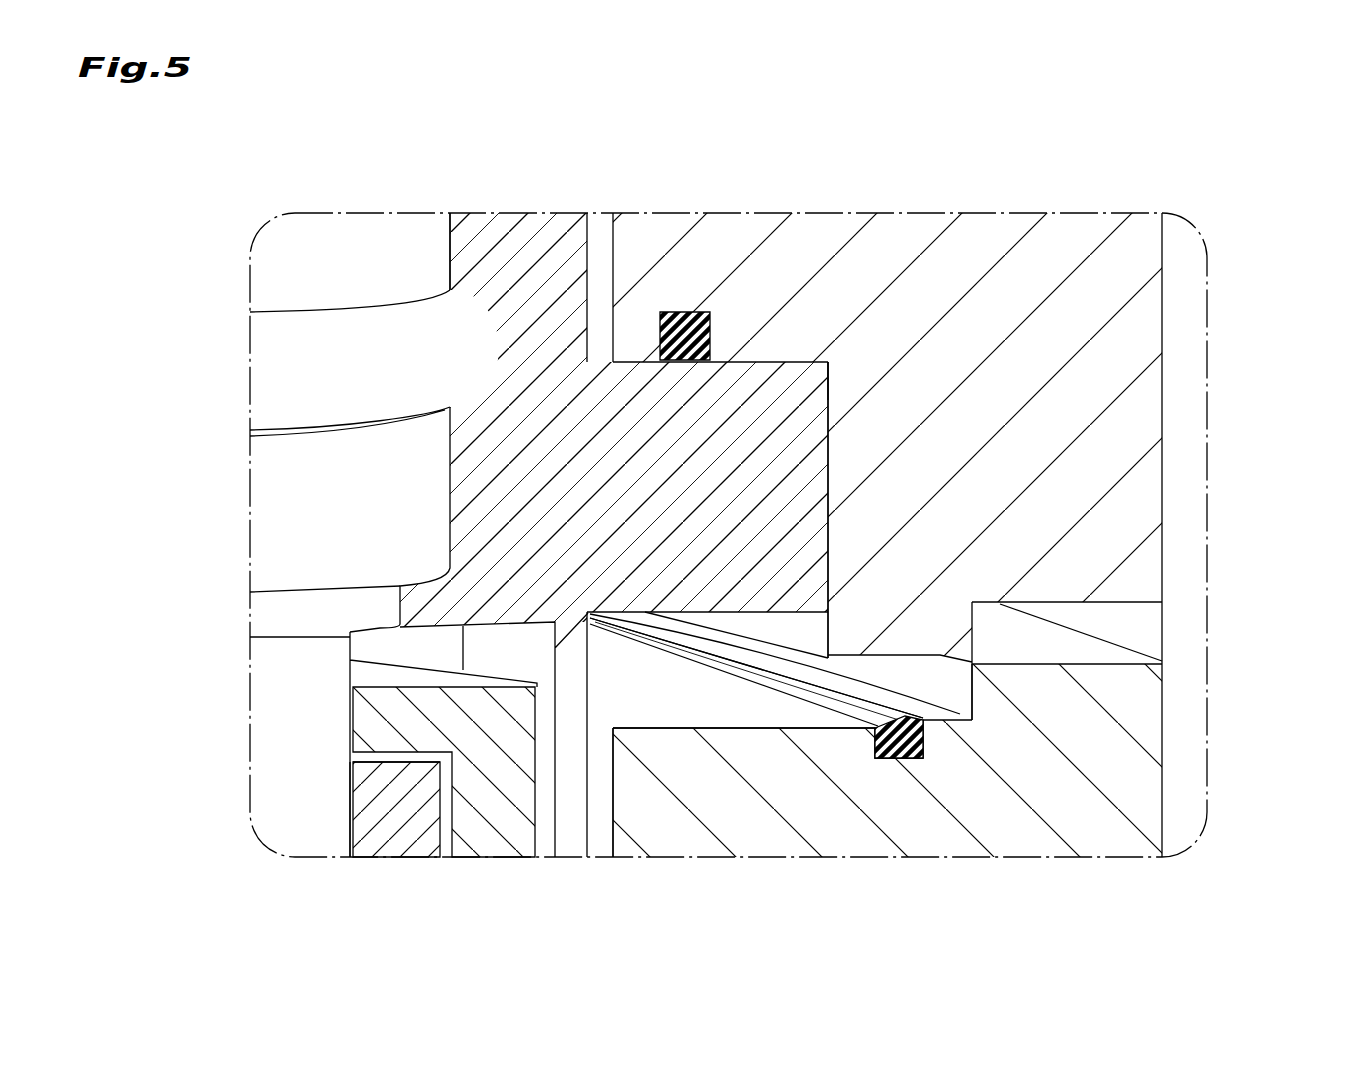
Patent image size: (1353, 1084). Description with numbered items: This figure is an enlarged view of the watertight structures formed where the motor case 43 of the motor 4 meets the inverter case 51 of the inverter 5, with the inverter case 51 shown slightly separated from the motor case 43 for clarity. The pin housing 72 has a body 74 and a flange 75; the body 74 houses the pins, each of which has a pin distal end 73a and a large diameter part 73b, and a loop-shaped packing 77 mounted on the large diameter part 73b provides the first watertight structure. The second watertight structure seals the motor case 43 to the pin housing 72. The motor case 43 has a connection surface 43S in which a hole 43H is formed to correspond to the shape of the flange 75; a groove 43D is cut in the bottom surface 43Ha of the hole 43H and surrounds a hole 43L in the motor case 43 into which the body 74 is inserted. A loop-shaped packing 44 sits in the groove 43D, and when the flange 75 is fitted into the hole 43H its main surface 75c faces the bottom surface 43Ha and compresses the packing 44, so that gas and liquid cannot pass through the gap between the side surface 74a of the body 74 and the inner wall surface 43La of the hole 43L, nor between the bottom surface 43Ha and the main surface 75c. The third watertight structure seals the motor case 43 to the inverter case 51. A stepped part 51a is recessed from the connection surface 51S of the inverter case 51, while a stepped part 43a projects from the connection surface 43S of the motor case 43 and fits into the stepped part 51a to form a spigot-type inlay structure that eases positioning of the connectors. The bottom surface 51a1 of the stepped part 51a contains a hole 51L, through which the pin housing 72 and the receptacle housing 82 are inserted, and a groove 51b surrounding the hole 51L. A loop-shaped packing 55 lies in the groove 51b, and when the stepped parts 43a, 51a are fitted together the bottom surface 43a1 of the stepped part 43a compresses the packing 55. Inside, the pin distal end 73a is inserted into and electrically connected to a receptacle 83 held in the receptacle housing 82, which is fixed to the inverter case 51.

The bearing device 4 is at (836, 522).
The motor case 43 is at (1162, 377).
The stepped part 43a is at (978, 625).
The bottom surface of the stepped part 43a1 is at (835, 697).
The groove 43D is at (690, 312).
The connection surface 43S is at (1145, 602).
The hole 43L is at (642, 236).
The inner wall surface 43La is at (597, 255).
The hole 43H is at (891, 384).
The bottom surface of the hole 43Ha is at (828, 390).
The packing 44 is at (692, 363).
The inner member assembly 5 is at (957, 786).
The inverter case 51 is at (1162, 757).
The stepped part 51a is at (968, 702).
The bottom surface of the stepped part 51a1 is at (763, 728).
The groove 51b is at (900, 760).
The connection surface 51S is at (1060, 664).
The hole 51L is at (614, 730).
The packing 55 is at (870, 707).
The pin housing 72 is at (590, 683).
The flange 75 is at (828, 467).
The main surface of the flange 75c is at (817, 387).
The pin distal end 73a is at (353, 827).
The large diameter part 73b is at (455, 255).
The body 74 is at (554, 256).
The side surface of the body 74a is at (588, 310).
The packing 77 is at (277, 370).
The receptacle housing 82 is at (535, 837).
The receptacle 83 is at (440, 833).